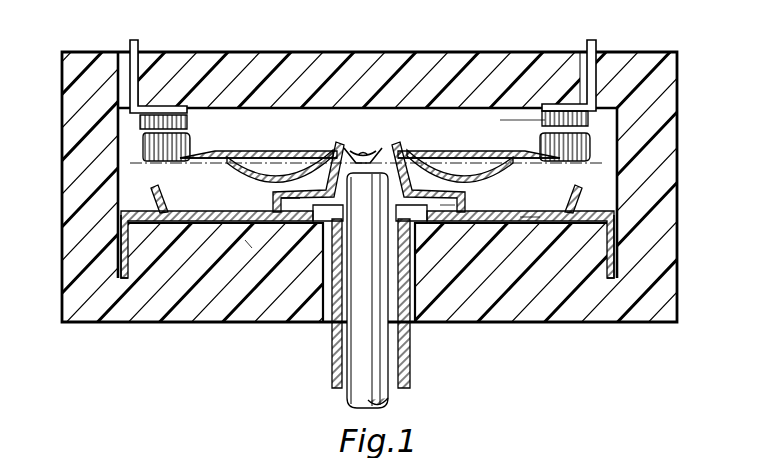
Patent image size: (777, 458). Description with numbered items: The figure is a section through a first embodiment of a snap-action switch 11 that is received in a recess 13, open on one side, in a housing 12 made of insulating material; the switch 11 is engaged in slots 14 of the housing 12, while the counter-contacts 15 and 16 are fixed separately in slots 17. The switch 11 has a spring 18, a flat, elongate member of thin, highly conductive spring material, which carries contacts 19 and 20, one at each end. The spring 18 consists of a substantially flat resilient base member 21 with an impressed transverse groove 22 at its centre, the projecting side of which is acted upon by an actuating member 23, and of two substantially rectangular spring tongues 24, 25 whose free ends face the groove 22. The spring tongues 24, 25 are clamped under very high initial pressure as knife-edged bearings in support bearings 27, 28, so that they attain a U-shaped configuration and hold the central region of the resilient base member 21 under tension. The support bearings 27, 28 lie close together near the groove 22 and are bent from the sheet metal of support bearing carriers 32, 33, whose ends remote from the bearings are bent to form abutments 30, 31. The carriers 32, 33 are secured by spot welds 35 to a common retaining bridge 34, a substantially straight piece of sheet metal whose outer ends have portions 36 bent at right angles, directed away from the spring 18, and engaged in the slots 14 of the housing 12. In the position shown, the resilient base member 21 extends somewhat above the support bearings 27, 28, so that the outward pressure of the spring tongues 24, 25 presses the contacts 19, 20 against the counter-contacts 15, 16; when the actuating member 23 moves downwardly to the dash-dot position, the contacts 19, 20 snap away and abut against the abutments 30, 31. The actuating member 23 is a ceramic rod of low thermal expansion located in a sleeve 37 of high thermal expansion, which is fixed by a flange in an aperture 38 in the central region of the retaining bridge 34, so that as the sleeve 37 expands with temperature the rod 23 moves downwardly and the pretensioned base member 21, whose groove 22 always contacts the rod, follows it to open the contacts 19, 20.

The snap-action switch 11 is at (397, 93).
The housing 12 is at (468, 270).
The recess 13 is at (526, 116).
The slots 14 is at (368, 255).
The counter-contact 15 is at (162, 120).
The counter-contact 16 is at (563, 118).
The slots 17 is at (128, 80).
The spring 18 is at (226, 148).
The contact 19 is at (150, 148).
The contact 20 is at (590, 146).
The resilient base member 21 is at (528, 106).
The groove 22 is at (360, 150).
The actuating member 23 is at (358, 370).
The spring tongue 24 is at (272, 173).
The spring tongue 25 is at (478, 170).
The support bearing 27 is at (311, 148).
The support bearing 28 is at (446, 152).
The abutment 30 is at (154, 200).
The abutment 31 is at (580, 196).
The support bearing carrier 32 is at (250, 245).
The support bearing carrier 33 is at (447, 206).
The retaining bridge 34 is at (528, 218).
The spot welds 35 is at (223, 211).
The portions 36 is at (124, 252).
The sleeve 37 is at (333, 368).
The aperture 38 is at (335, 225).